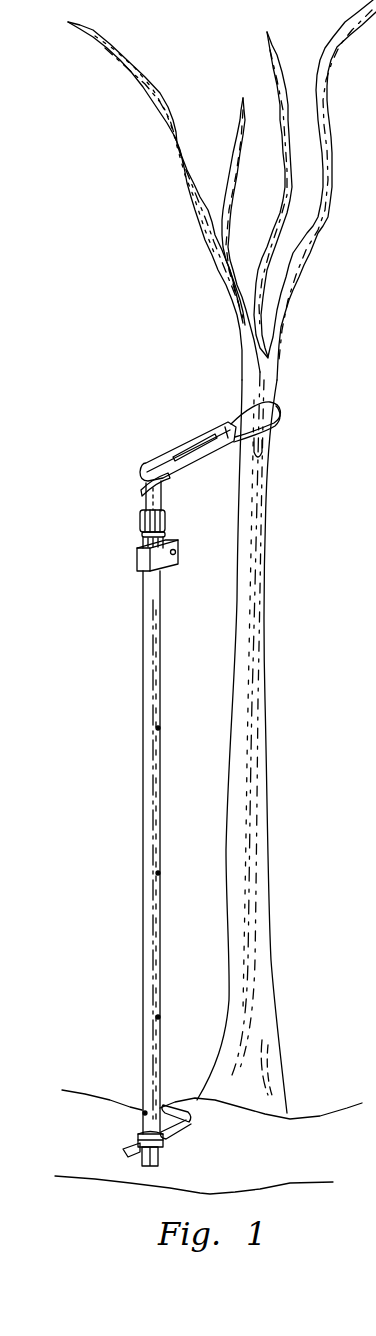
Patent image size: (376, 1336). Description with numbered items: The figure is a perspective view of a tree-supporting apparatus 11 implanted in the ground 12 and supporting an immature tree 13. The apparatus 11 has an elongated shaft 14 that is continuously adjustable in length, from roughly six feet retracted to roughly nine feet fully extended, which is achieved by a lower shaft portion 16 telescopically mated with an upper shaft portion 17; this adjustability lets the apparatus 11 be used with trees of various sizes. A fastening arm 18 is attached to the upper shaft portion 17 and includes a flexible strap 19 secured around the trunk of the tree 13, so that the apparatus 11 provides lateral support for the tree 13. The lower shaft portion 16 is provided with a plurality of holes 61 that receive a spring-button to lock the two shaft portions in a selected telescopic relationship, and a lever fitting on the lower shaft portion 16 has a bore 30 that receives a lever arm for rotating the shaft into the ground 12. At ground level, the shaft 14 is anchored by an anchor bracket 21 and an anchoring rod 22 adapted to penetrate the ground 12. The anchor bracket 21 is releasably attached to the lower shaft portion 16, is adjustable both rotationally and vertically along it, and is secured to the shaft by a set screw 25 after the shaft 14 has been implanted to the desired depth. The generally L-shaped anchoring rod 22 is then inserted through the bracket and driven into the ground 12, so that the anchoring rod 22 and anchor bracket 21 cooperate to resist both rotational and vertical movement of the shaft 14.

The tree-supporting apparatus 11 is at (74, 418).
The ground 12 is at (88, 1133).
The tree 13 is at (253, 627).
The elongated shaft 14 is at (116, 852).
The lower shaft portion 16 is at (152, 962).
The upper shaft portion 17 is at (165, 492).
The fastening arm 18 is at (191, 441).
The flexible strap 19 is at (265, 436).
The anchor bracket 21 is at (162, 1138).
The anchoring rod 22 is at (168, 1150).
The set screw 25 is at (141, 1150).
The bore 30 is at (181, 549).
The holes 61 is at (158, 728).